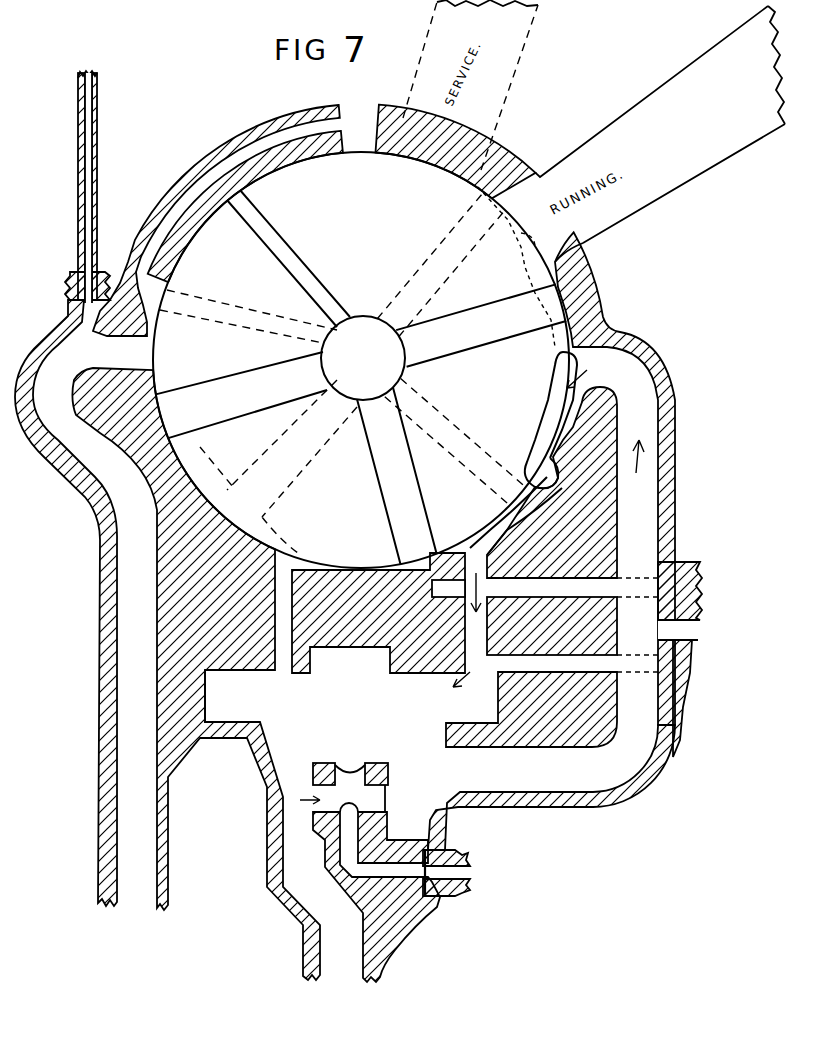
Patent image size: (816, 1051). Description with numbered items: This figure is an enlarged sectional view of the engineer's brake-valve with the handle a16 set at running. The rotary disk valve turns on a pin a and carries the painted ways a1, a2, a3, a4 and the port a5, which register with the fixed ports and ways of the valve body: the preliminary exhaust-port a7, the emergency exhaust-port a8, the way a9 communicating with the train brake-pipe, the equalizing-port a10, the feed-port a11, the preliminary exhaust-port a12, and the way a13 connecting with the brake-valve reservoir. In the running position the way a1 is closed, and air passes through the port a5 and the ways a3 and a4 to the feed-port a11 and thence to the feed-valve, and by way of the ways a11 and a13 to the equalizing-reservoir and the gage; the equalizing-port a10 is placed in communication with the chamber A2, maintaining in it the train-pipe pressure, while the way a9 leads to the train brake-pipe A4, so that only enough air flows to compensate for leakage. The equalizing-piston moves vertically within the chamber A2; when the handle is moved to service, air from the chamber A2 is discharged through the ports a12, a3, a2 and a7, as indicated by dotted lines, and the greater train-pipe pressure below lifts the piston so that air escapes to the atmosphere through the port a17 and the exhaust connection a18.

The pin a is at (363, 358).
The way a1 is at (481, 325).
The way a2 is at (293, 238).
The way a3 is at (256, 452).
The way a4 is at (408, 477).
The port a5 is at (560, 408).
The preliminary exhaust-port a7 is at (216, 215).
The emergency exhaust-port a8 is at (446, 99).
The way communicating with the train brake-pipe a9 is at (565, 541).
The equalizing-port a10 is at (508, 533).
The feed-port a11 is at (378, 613).
The preliminary exhaust-port a12 is at (196, 674).
The way connecting with brake-valve reservoir a13 is at (531, 672).
The handle a16 is at (660, 134).
The port a17 is at (357, 809).
The exhaust connection a18 is at (477, 873).
The chamber A2 is at (335, 696).
The train brake-pipe A4 is at (338, 963).